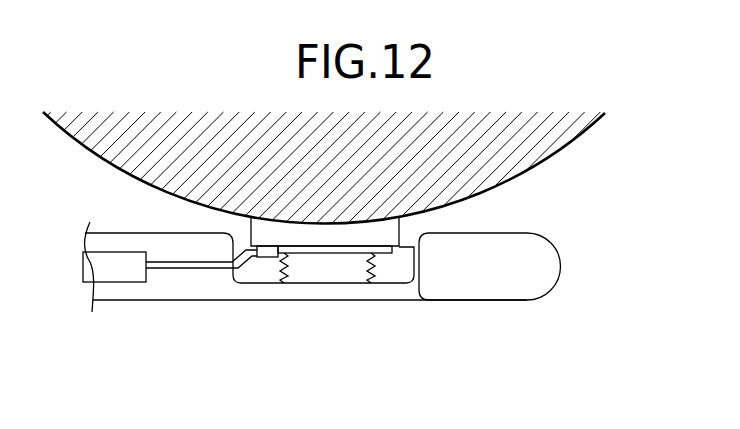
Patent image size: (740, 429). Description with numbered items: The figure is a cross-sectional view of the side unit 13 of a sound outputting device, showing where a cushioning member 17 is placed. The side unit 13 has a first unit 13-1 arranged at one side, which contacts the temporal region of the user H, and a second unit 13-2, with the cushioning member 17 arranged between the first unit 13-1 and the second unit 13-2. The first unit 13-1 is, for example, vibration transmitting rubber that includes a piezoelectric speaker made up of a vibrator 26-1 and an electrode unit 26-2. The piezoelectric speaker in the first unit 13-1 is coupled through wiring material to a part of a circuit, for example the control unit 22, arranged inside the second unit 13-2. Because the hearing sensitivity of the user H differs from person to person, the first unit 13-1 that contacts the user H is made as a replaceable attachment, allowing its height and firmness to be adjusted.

The user H is at (530, 145).
The side unit 13 is at (420, 300).
The first unit 13-1 is at (380, 233).
The second unit 13-2 is at (542, 268).
The cushioning member 17 is at (325, 268).
The control unit 22 is at (120, 268).
The vibrator 26-1 is at (380, 272).
The electrode unit 26-2 is at (263, 300).